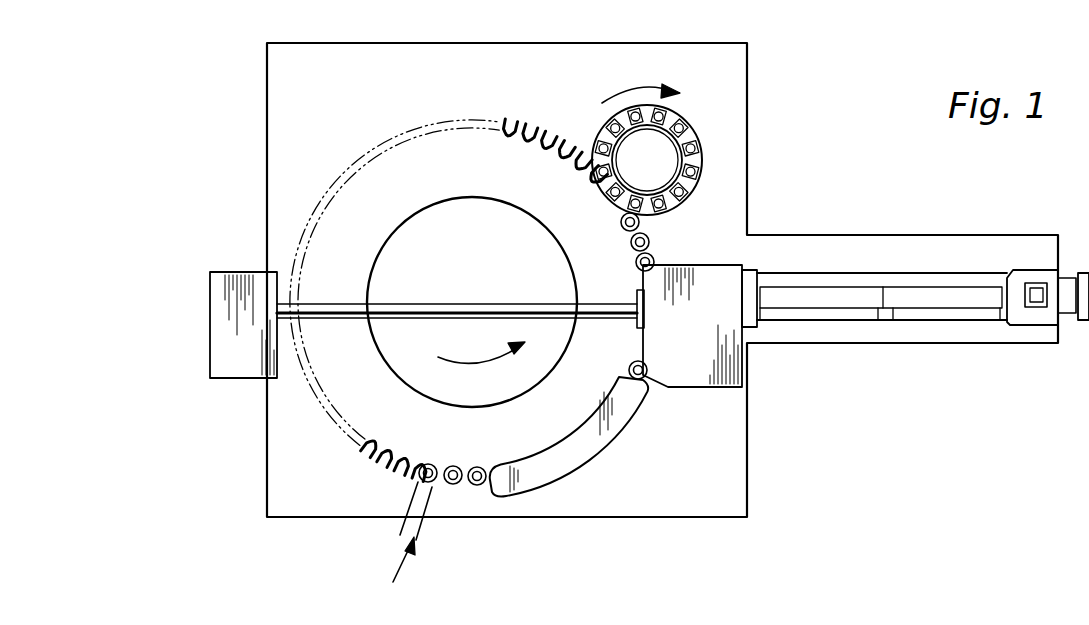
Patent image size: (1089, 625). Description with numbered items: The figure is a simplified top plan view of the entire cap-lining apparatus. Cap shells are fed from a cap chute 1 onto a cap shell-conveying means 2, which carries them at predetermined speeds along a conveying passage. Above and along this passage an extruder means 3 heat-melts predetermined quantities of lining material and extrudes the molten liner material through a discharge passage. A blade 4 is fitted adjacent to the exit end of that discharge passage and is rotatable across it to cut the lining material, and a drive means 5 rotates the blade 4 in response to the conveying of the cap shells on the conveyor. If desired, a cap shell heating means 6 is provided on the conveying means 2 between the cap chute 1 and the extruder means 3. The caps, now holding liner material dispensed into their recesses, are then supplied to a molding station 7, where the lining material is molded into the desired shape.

The cap chute 1 is at (423, 530).
The cap shell-conveying means 2 is at (290, 406).
The extruder means 3 is at (732, 365).
The blade 4 is at (643, 296).
The drive means 5 is at (211, 350).
The cap shell heating means 6 is at (565, 470).
The molding station 7 is at (662, 142).